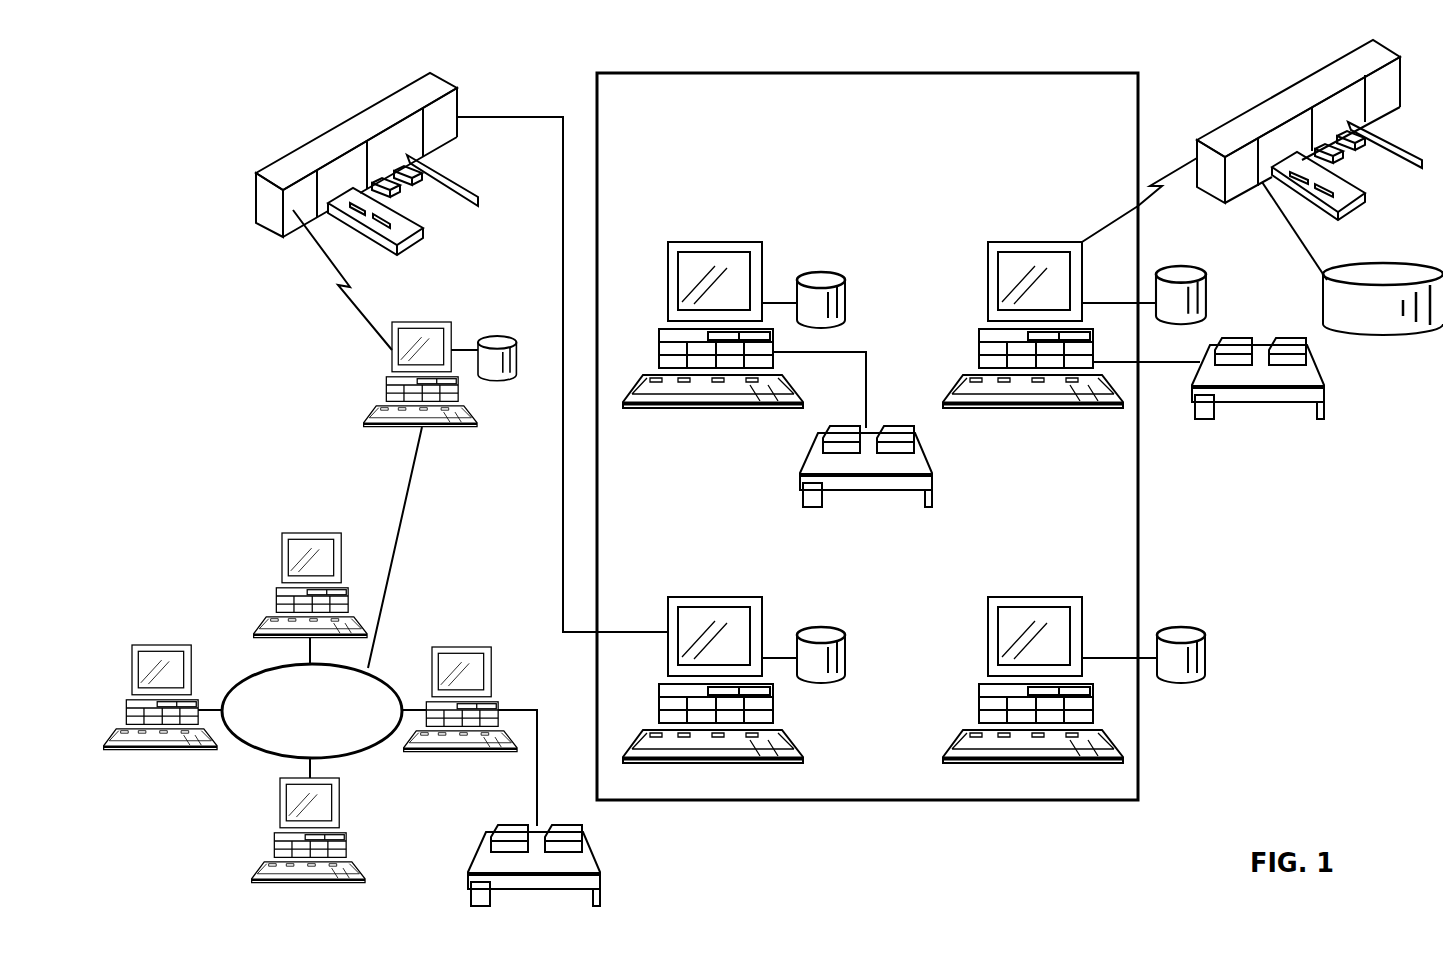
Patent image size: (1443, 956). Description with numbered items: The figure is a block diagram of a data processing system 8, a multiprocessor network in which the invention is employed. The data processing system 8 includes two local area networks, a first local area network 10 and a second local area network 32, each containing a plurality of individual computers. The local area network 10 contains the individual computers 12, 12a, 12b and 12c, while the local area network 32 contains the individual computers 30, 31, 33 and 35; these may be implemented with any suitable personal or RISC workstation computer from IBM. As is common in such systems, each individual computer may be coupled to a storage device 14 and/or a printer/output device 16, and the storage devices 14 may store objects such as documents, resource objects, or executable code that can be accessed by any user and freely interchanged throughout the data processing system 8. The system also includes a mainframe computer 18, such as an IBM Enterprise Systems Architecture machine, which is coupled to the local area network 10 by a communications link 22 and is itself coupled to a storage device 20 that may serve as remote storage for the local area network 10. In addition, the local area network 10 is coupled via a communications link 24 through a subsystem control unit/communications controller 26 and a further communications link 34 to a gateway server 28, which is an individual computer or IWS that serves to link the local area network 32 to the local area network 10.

The data processing system 8 is at (588, 78).
The local area network 10 is at (748, 150).
The individual computer 12 is at (1008, 242).
The individual computer 12a is at (688, 242).
The individual computer 12b is at (688, 597).
The individual computer 12c is at (1008, 597).
The storage device 14 is at (850, 302).
The printer/output device 16 is at (915, 468).
The mainframe computer 18 is at (1220, 138).
The storage device 20 is at (1380, 320).
The communications link 22 is at (1168, 172).
The communications link 24 is at (563, 262).
The subsystem control unit/communications controller 26 is at (330, 140).
The gateway server 28 is at (432, 322).
The individual computer 30 is at (465, 647).
The individual computer 31 is at (342, 797).
The local area network 32 is at (262, 752).
The individual computer 33 is at (155, 645).
The communications link 34 is at (362, 316).
The individual computer 35 is at (282, 558).